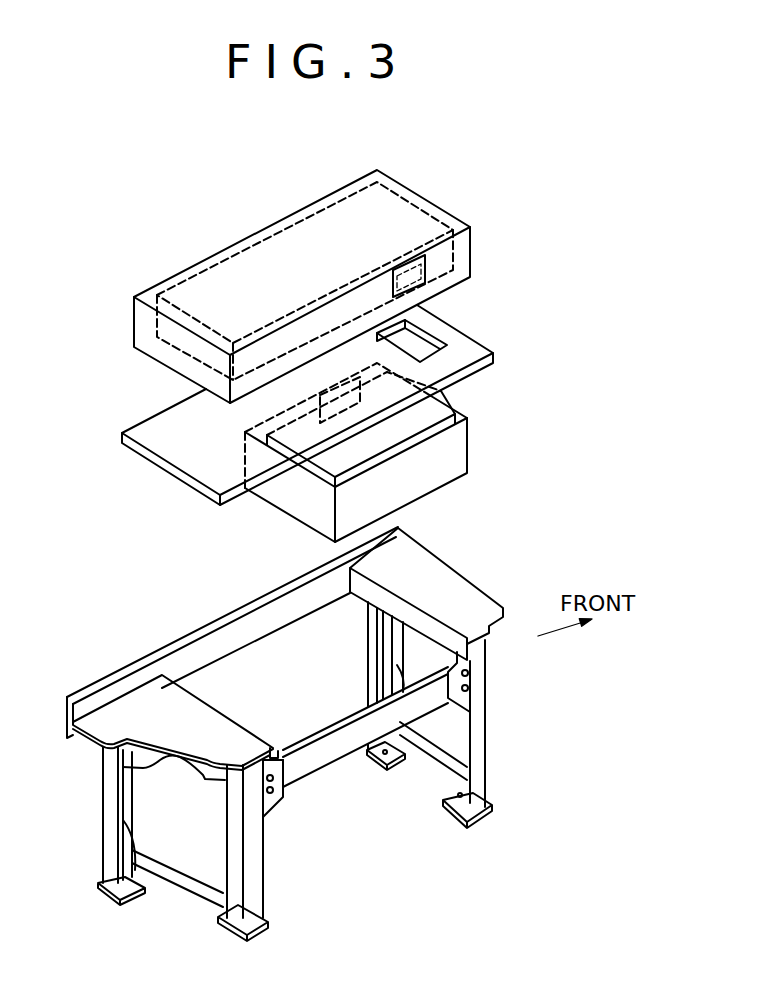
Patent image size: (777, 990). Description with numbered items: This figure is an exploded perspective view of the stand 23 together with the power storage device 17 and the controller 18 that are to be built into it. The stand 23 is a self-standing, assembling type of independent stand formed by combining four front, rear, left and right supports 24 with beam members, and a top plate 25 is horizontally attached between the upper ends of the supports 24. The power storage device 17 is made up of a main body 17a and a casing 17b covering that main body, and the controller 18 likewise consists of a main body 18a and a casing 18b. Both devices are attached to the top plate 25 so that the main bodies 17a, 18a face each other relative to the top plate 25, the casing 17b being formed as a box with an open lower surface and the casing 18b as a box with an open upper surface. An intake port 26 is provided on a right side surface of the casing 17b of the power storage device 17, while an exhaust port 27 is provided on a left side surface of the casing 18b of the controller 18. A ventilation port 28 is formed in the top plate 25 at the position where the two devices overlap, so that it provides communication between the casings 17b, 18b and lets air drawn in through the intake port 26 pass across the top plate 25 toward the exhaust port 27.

The power storage device 17 is at (319, 275).
The main body of the power storage device 17a is at (305, 281).
The casing of the power storage device 17b is at (319, 286).
The controller 18 is at (396, 463).
The main body of the controller 18a is at (395, 462).
The casing of the controller 18b is at (403, 494).
The stand 23 is at (298, 734).
The supports 24 is at (367, 657).
The top plate 25 is at (300, 405).
The intake port 26 is at (402, 282).
The exhaust port 27 is at (303, 470).
The ventilation port 28 is at (424, 352).